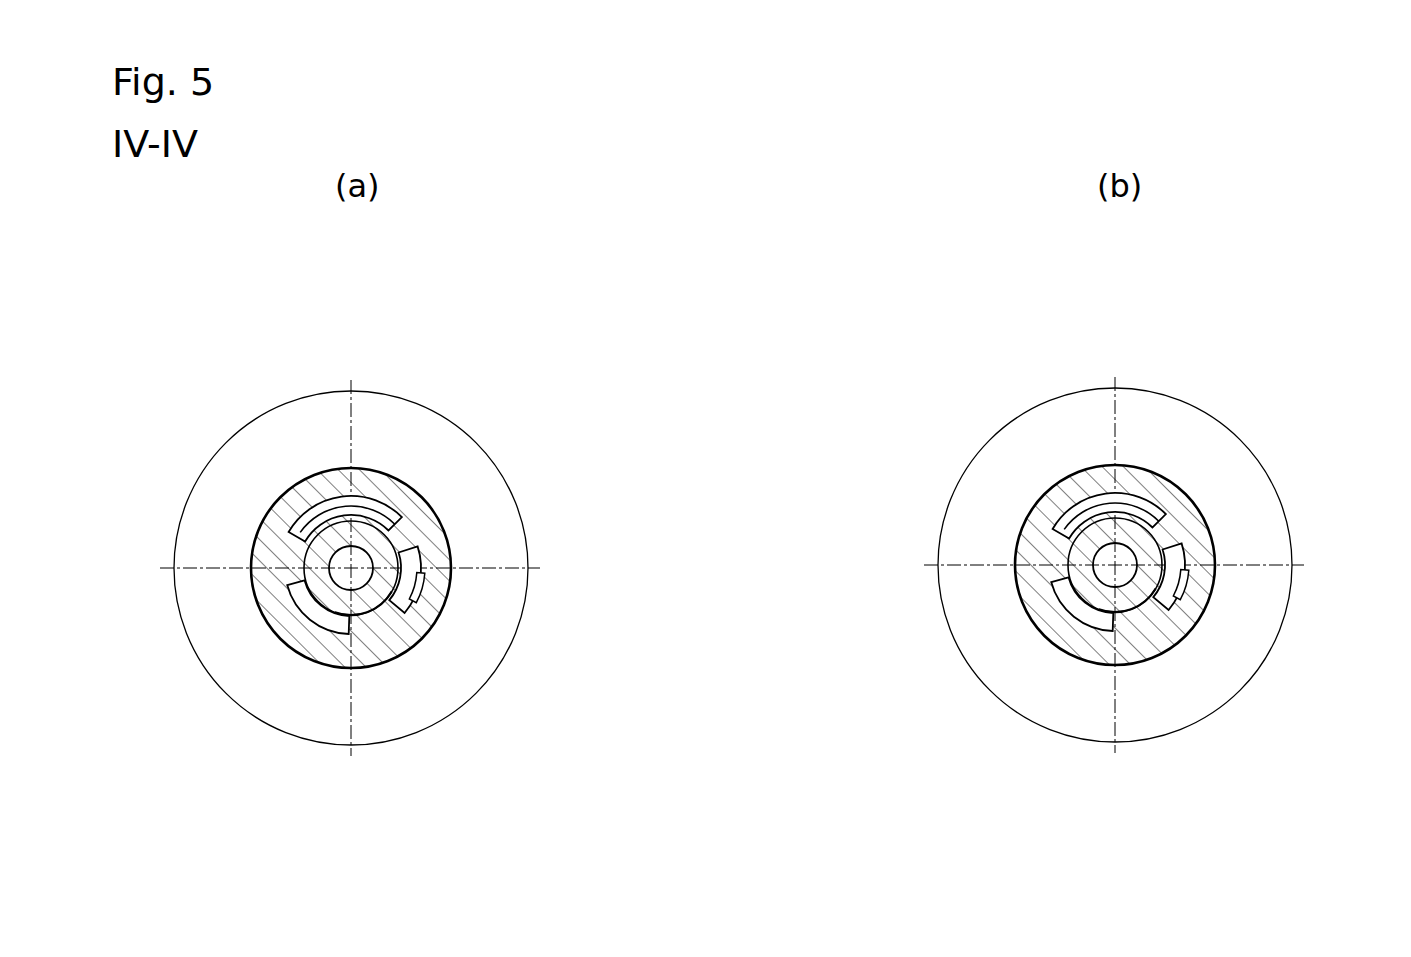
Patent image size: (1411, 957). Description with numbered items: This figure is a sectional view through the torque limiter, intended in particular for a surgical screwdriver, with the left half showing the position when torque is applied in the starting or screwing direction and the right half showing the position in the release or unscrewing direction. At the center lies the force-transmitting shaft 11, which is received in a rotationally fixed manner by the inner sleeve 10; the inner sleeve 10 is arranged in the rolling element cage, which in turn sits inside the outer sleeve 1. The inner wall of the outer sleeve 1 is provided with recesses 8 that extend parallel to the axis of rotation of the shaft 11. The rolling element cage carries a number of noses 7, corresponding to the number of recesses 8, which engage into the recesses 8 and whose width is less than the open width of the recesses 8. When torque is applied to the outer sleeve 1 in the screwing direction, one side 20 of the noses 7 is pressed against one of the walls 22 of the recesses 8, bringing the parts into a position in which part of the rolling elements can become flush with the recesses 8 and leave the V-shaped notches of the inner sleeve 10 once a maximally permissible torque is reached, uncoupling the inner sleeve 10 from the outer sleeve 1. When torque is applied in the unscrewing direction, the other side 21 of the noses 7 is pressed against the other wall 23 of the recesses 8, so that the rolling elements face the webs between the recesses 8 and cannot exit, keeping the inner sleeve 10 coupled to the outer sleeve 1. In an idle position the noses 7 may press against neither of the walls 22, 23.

The outer sleeve 1 is at (297, 510).
The noses 7 is at (417, 587).
The recesses 8 is at (423, 577).
The inner sleeve 10 is at (356, 606).
The force-transmitting shaft 11 is at (357, 565).
The one side of the noses 20 is at (307, 556).
The other side of the noses 21 is at (403, 527).
The wall of the recesses 22 is at (363, 606).
The other wall of the recesses 23 is at (297, 590).